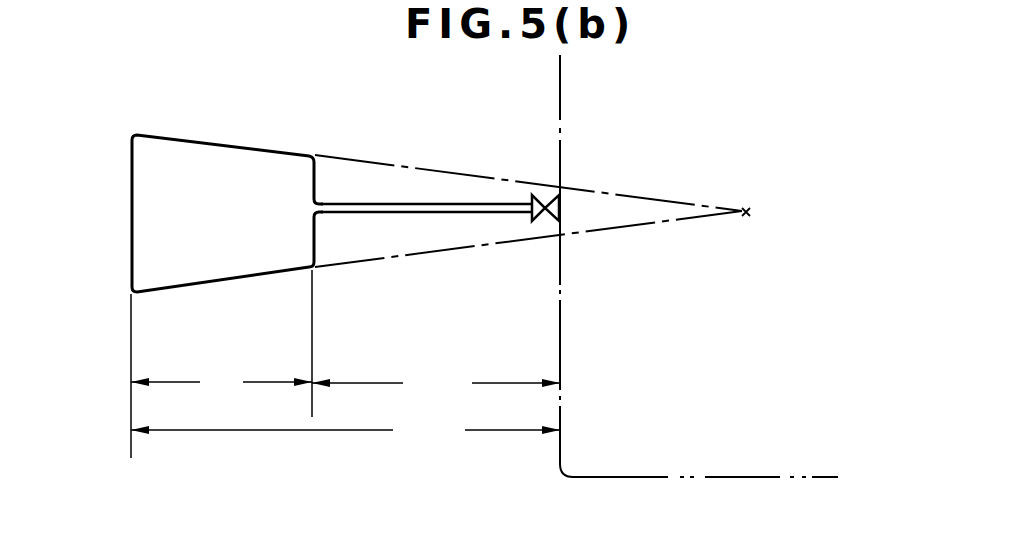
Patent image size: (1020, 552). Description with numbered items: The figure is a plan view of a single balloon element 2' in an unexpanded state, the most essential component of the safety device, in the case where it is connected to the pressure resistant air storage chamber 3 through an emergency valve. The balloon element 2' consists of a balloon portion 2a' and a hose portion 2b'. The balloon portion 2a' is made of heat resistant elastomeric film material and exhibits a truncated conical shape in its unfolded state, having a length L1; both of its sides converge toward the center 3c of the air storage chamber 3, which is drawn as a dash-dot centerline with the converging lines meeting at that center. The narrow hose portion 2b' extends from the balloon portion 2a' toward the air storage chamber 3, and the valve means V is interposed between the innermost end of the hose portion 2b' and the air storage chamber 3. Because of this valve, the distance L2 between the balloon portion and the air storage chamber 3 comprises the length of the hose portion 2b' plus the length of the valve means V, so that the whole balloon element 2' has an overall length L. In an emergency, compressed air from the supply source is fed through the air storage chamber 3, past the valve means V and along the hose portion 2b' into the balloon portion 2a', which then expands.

The balloon element 2' is at (304, 198).
The balloon portion 2a' is at (227, 195).
The hose portion 2b' is at (426, 251).
The valve means V is at (546, 221).
The center of the air storage chamber 3c is at (752, 212).
The air storage chamber 3 is at (638, 461).
The length of the balloon portion L1 is at (221, 364).
The distance between the hose portion and the air storage chamber L2 is at (436, 384).
The length of the balloon element L is at (345, 430).